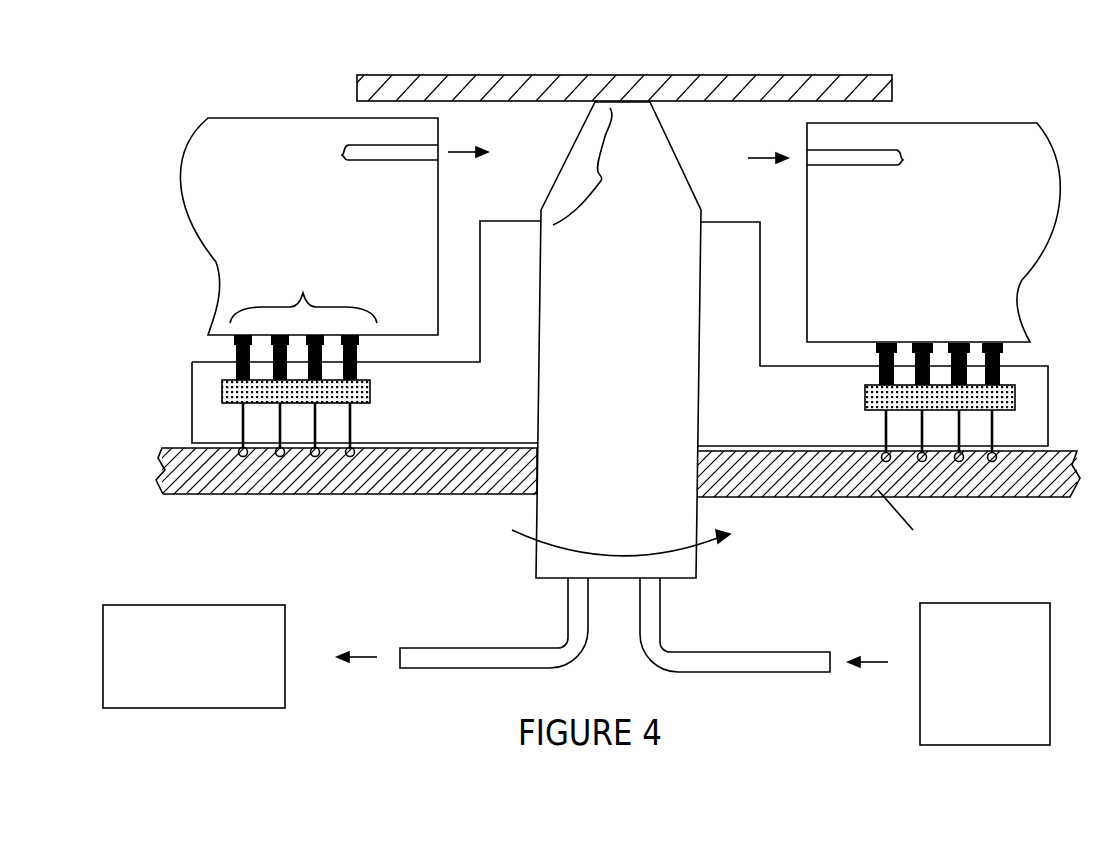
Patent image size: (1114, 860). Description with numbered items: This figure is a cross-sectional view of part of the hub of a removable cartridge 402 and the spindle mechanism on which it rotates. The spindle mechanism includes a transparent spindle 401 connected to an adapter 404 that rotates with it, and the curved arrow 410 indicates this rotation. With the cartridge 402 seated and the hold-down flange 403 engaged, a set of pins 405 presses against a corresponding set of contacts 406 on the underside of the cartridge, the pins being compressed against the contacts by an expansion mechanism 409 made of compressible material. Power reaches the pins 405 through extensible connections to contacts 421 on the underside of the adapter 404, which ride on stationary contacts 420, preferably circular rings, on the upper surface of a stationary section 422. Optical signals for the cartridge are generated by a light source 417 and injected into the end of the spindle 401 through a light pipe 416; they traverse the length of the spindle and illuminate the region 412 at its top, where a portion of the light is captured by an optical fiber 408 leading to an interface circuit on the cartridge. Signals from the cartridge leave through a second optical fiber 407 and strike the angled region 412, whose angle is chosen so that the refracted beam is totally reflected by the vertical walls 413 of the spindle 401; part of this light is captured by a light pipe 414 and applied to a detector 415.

The spindle 401 is at (692, 427).
The removable cartridge 402 is at (278, 130).
The hold-down flange 403 is at (632, 83).
The adapter 404 is at (1037, 438).
The pins 405 is at (235, 353).
The contacts 406 is at (303, 283).
The optical fiber 407 is at (372, 155).
The optical fiber 408 is at (857, 160).
The expansion mechanism 409 is at (367, 395).
The rotation of light guide 410 is at (565, 509).
The angled region 412 is at (594, 166).
The vertical walls 413 is at (548, 377).
The light pipe 414 is at (450, 650).
The detector 415 is at (222, 688).
The light pipe 416 is at (763, 657).
The light source 417 is at (1003, 727).
The stationary contacts 420 is at (243, 457).
The contacts 421 is at (883, 448).
The stationary section 422 is at (163, 450).